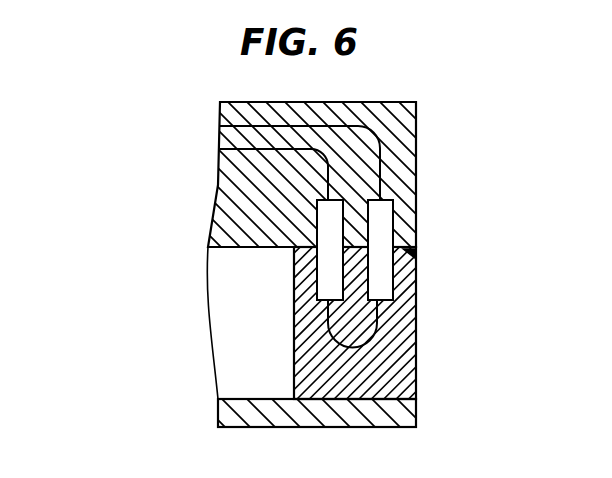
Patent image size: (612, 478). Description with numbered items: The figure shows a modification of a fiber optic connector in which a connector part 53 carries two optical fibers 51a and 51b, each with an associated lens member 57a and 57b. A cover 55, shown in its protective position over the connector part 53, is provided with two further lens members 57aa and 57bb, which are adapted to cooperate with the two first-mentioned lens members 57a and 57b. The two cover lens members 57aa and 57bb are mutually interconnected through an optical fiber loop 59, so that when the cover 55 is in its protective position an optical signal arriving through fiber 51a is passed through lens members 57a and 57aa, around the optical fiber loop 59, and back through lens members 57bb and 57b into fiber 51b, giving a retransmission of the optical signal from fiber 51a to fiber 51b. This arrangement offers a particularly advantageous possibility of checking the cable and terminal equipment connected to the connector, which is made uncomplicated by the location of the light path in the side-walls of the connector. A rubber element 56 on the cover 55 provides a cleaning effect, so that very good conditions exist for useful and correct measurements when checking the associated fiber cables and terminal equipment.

The optical fiber 51a is at (220, 126).
The optical fiber 51b is at (220, 149).
The connector part 53 is at (268, 213).
The cover 55 is at (294, 348).
The rubber element 56 is at (410, 254).
The lens member 57a is at (385, 218).
The lens member 57aa is at (385, 280).
The lens member 57b is at (330, 233).
The lens member 57bb is at (327, 278).
The optical fiber loop 59 is at (294, 348).